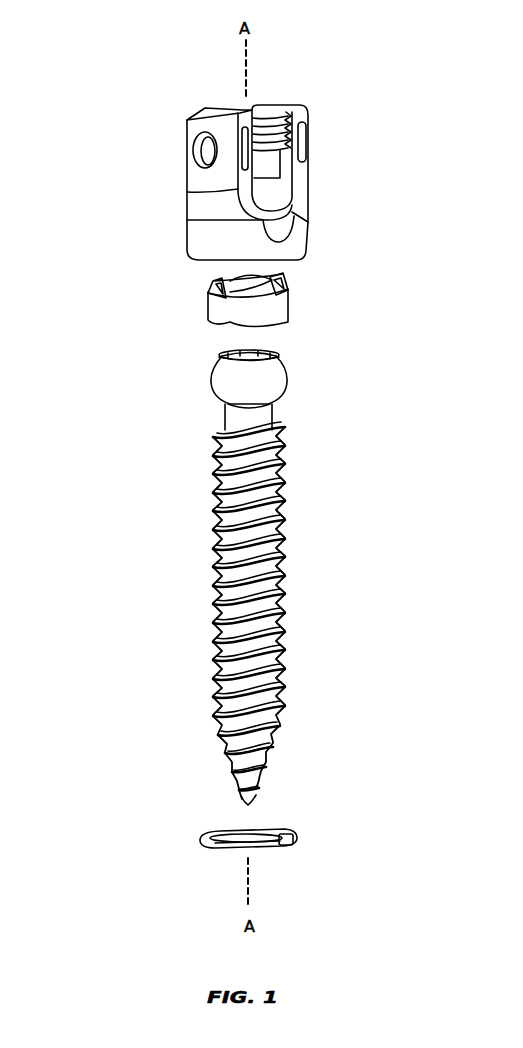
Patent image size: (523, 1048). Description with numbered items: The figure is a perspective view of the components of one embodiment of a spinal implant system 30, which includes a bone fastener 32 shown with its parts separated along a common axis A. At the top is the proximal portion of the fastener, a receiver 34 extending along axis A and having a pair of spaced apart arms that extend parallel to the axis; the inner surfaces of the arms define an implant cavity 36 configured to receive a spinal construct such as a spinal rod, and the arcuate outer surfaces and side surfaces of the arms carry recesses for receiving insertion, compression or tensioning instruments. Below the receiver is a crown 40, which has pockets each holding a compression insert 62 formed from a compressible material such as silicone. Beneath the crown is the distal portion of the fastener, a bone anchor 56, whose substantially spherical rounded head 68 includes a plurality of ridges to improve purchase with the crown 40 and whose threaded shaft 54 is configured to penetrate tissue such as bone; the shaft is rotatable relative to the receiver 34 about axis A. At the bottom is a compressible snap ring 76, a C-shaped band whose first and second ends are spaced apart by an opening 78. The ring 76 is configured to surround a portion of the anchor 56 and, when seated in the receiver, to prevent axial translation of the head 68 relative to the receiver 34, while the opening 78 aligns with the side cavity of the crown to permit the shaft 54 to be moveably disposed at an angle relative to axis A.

The spinal implant system 30 is at (106, 409).
The bone fastener 32 is at (426, 486).
The receiver 34 is at (160, 187).
The implant cavity 36 is at (284, 178).
The crown 40 is at (272, 311).
The threaded shaft 54 is at (233, 656).
The bone anchor 56 is at (321, 604).
The compression insert 62 is at (214, 290).
The rounded head 68 is at (268, 379).
The compressible snap ring 76 is at (190, 825).
The opening 78 is at (286, 851).